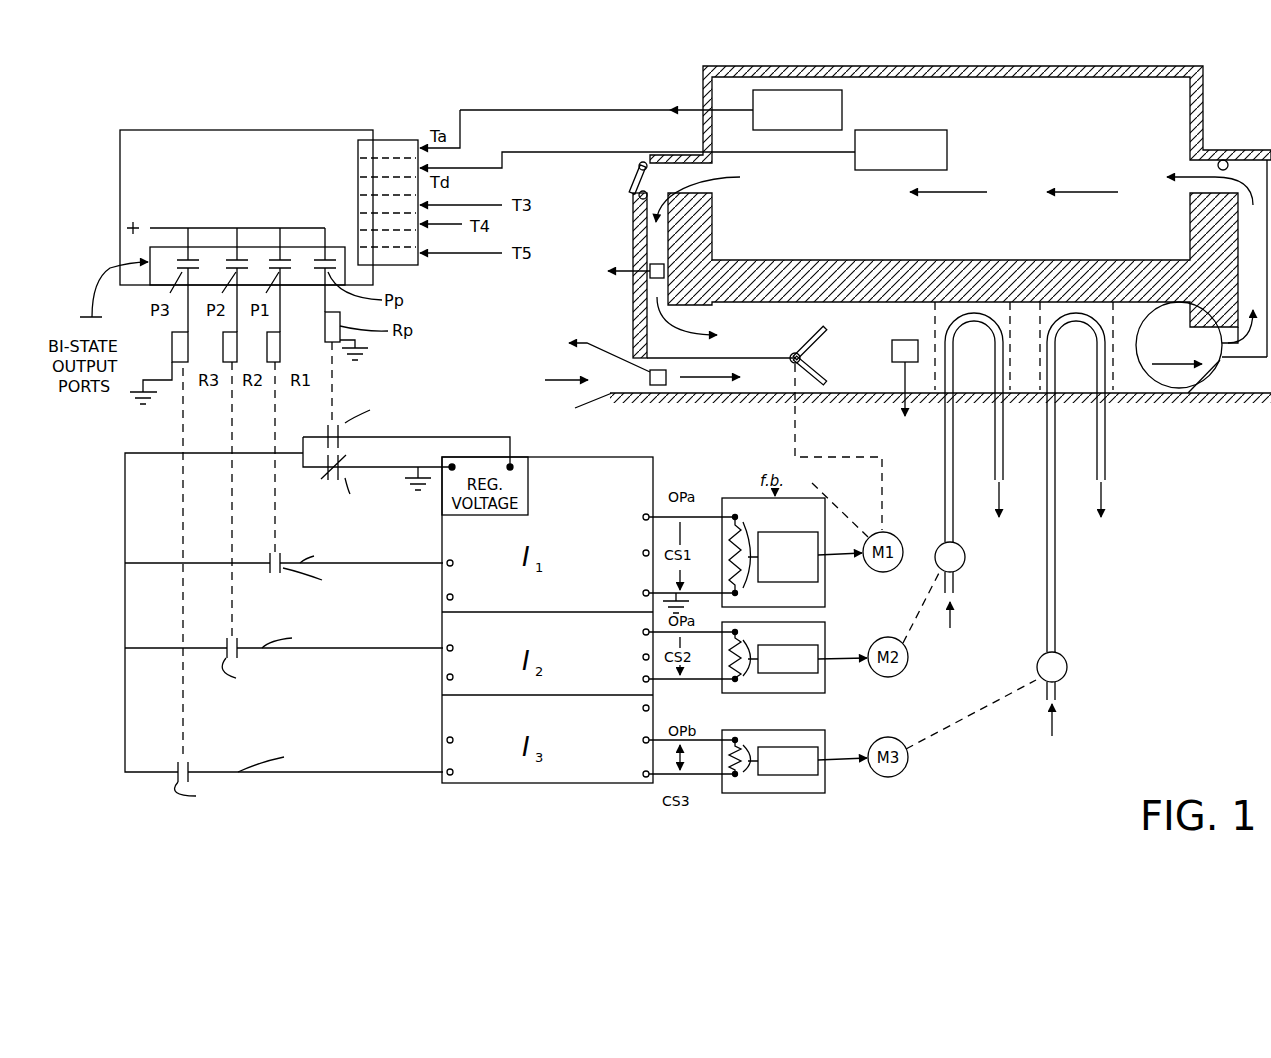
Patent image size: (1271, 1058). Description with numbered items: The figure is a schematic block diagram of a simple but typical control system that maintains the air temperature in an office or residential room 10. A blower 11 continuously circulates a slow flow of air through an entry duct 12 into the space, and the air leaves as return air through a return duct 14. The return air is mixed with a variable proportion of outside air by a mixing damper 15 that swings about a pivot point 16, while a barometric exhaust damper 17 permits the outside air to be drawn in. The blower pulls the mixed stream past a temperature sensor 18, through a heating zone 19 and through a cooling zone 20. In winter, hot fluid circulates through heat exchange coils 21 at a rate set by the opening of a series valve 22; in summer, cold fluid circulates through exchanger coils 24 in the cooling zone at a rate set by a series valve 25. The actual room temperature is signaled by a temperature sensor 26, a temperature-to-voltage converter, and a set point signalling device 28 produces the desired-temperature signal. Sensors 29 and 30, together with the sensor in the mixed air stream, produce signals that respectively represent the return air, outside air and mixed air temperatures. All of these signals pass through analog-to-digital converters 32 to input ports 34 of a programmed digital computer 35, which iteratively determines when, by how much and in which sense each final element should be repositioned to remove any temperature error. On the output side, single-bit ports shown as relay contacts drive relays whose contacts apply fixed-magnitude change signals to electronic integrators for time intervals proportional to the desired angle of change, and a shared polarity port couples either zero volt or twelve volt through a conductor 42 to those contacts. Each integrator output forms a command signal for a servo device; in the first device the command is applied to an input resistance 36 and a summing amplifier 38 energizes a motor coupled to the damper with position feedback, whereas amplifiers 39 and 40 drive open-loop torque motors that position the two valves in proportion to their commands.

The room 10 is at (950, 236).
The blower 11 is at (1190, 396).
The entry duct 12 is at (1228, 160).
The return duct 14 is at (648, 252).
The mixing damper 15 is at (822, 338).
The pivot point 16 is at (817, 426).
The barometric exhaust damper 17 is at (632, 173).
The temperature sensor 18 is at (902, 339).
The heating zone 19 is at (984, 356).
The cooling zone 20 is at (1086, 356).
The heat exchange coils 21 is at (972, 312).
The series valve 22 is at (963, 565).
The exchanger coils 24 is at (1075, 312).
The series valve 25 is at (1066, 656).
The temperature sensor 26 is at (842, 103).
The set point signalling device 28 is at (947, 148).
The sensor 29 is at (648, 268).
The sensor 30 is at (653, 386).
The analog-to-digital converters 32 is at (399, 138).
The input ports 34 is at (364, 138).
The programmed digital computer 35 is at (147, 128).
The input resistance 36 is at (735, 542).
The summing amplifier 38 is at (786, 553).
The amplifier 39 is at (818, 675).
The amplifier 40 is at (818, 777).
The conductor 42 is at (124, 490).